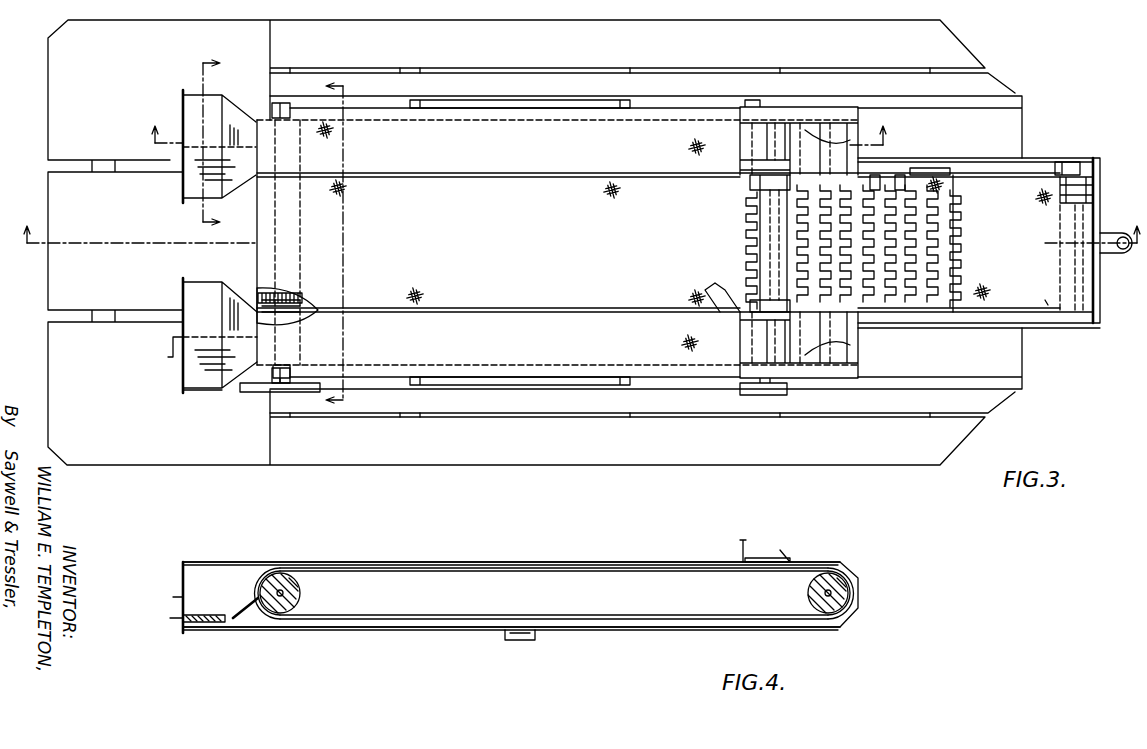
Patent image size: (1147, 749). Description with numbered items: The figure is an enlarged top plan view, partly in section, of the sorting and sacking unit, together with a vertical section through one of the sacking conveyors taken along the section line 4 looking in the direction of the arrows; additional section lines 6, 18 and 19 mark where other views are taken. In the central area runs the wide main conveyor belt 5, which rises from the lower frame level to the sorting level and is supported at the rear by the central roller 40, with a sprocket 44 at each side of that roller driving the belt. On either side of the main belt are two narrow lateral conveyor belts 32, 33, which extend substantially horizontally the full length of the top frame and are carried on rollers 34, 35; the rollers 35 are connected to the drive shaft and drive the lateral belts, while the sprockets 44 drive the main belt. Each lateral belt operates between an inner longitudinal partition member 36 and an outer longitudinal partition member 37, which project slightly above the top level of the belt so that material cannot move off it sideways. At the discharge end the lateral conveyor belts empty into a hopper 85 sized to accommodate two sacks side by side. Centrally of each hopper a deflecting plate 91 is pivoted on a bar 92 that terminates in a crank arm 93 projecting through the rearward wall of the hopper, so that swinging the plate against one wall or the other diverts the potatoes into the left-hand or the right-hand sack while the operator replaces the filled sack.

In FIG. 3, the section line 4— 4 is at (517, 121).
In FIG. 3, the main conveyor belt 5 is at (1046, 300).
In FIG. 3, the section line 6— 6 is at (581, 221).
In FIG. 3, the section line 18— 18 is at (211, 143).
In FIG. 3, the section line 19— 19 is at (349, 242).
In FIG. 3, the lateral conveyor belt 32 is at (507, 178).
In FIG. 4, the lateral conveyor belt 32 is at (455, 570).
In FIG. 3, the lateral conveyor belt 33 is at (488, 318).
In FIG. 4, the roller 34 is at (826, 578).
In FIG. 3, the roller 35 is at (285, 318).
In FIG. 4, the roller 35 is at (290, 582).
In FIG. 3, the inner longitudinal partition member 36 is at (376, 260).
In FIG. 3, the outer longitudinal partition member 37 is at (403, 362).
In FIG. 4, the outer longitudinal partition member 37 is at (408, 562).
In FIG. 3, the central roller 40 is at (262, 290).
In FIG. 3, the sprocket 44 is at (265, 293).
In FIG. 3, the hopper 85 is at (245, 355).
In FIG. 3, the deflecting plate 91 is at (195, 367).
In FIG. 3, the bar 92 is at (213, 332).
In FIG. 3, the crank arm 93 is at (175, 347).